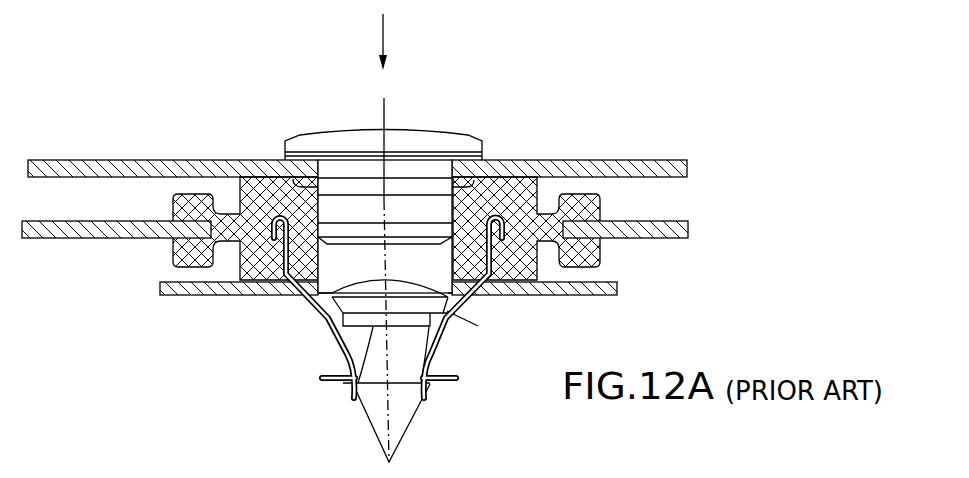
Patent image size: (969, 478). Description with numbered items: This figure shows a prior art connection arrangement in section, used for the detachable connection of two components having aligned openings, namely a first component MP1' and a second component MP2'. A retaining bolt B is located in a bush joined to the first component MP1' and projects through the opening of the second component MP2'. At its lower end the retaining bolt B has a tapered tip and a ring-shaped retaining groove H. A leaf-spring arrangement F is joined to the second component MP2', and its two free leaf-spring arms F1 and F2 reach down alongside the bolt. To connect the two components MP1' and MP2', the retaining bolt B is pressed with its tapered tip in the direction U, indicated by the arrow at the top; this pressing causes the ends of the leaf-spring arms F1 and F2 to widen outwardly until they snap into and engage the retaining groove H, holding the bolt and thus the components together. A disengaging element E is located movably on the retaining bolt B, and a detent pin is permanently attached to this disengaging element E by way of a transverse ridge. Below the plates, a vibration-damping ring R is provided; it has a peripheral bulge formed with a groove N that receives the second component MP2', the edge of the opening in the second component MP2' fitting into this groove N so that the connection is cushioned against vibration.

The first component MP1' is at (360, 137).
The second component MP2' is at (355, 248).
The groove N is at (182, 240).
The vibration-damping ring R is at (573, 284).
The disengaging element E is at (343, 282).
The leaf-spring arrangement F is at (420, 286).
The leaf-spring arm F1 is at (343, 345).
The leaf-spring arm F2 is at (437, 338).
The retaining bolt B is at (355, 385).
The retaining groove H is at (421, 387).
The pressing direction U is at (394, 42).